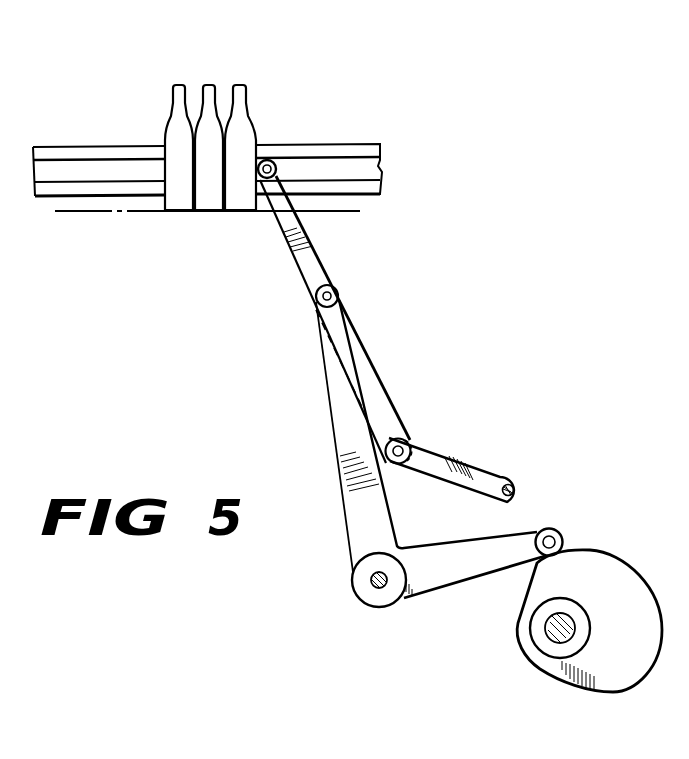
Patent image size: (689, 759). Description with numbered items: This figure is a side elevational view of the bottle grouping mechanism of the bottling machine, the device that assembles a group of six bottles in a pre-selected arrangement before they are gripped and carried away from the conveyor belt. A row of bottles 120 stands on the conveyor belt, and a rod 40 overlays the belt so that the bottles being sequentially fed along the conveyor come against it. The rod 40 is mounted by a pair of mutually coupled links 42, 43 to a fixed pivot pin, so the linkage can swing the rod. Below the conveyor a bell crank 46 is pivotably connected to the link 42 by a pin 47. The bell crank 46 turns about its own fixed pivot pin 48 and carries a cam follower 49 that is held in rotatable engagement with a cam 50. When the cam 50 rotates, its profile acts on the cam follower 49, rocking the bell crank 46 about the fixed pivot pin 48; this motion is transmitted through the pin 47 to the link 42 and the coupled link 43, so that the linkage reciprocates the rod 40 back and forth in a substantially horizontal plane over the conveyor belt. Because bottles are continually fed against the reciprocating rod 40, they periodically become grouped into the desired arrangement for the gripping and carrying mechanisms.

The bottles 120 is at (240, 113).
The rod 40 is at (282, 158).
The link 42 is at (382, 401).
The link 43 is at (435, 458).
The bell crank 46 is at (336, 431).
The pin 47 is at (332, 295).
The fixed pivot pin 48 is at (374, 590).
The cam follower 49 is at (562, 532).
The cam 50 is at (632, 563).